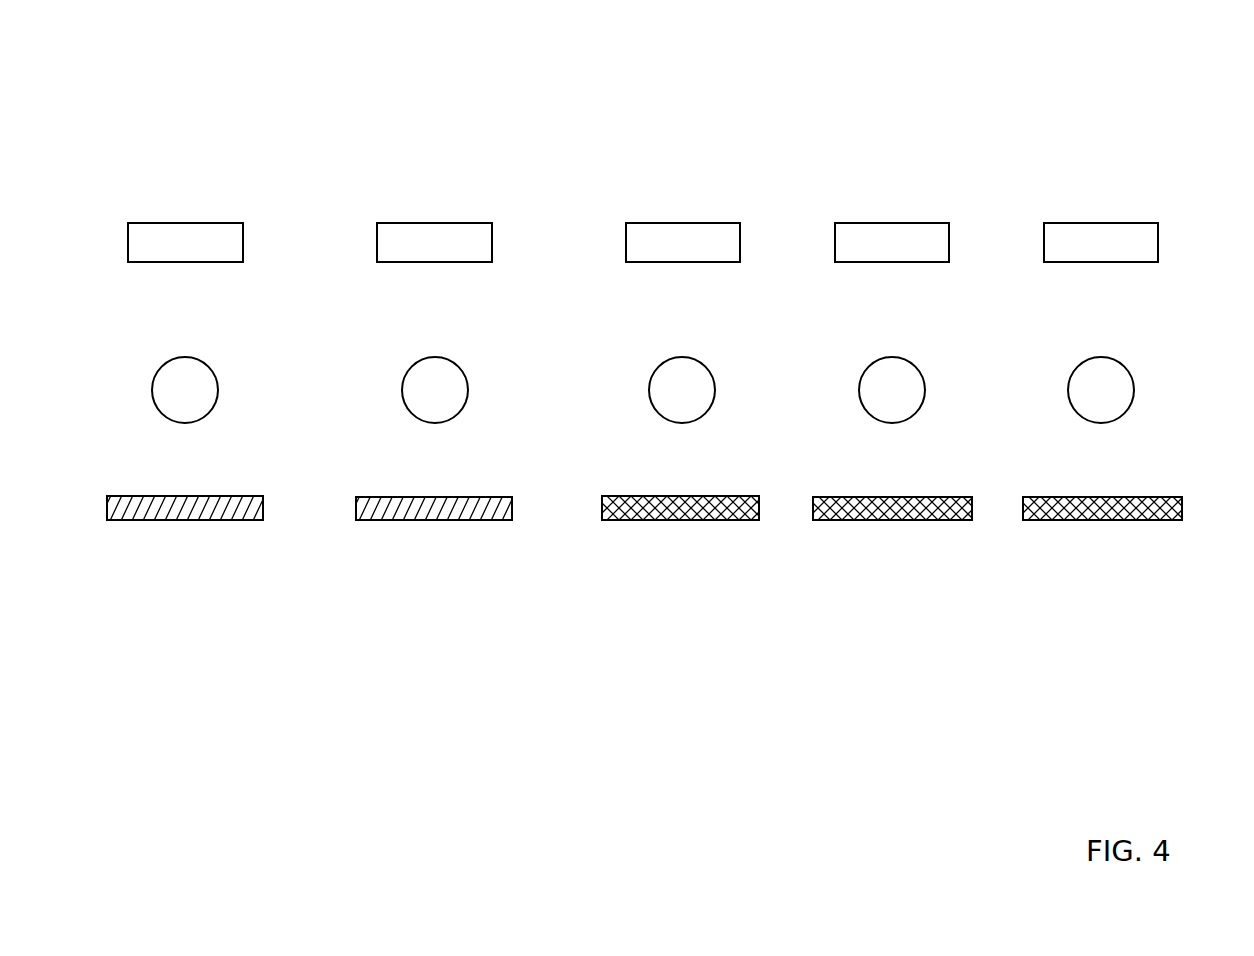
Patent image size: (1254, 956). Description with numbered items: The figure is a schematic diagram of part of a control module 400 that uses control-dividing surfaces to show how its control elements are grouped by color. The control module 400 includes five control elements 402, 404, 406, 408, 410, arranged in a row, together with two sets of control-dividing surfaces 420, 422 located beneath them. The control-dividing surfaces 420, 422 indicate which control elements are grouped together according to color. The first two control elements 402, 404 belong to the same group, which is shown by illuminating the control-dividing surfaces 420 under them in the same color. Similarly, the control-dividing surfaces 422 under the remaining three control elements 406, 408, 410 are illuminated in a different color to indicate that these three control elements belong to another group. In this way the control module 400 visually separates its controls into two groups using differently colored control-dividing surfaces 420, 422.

The control module 400 is at (845, 129).
The control element 402 is at (185, 357).
The control element 404 is at (435, 357).
The control element 406 is at (682, 357).
The control element 408 is at (892, 357).
The control element 410 is at (1101, 357).
The control-dividing surfaces 420 is at (490, 540).
The control-dividing surfaces 422 is at (1157, 540).